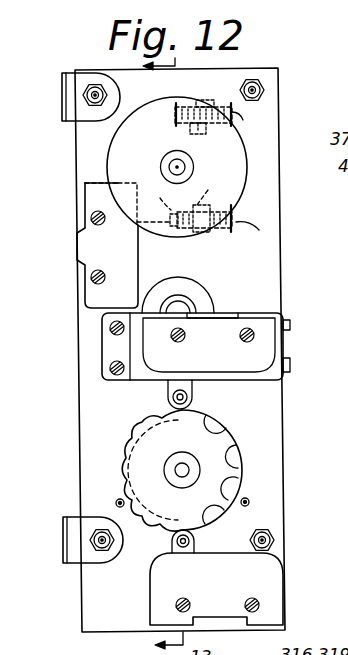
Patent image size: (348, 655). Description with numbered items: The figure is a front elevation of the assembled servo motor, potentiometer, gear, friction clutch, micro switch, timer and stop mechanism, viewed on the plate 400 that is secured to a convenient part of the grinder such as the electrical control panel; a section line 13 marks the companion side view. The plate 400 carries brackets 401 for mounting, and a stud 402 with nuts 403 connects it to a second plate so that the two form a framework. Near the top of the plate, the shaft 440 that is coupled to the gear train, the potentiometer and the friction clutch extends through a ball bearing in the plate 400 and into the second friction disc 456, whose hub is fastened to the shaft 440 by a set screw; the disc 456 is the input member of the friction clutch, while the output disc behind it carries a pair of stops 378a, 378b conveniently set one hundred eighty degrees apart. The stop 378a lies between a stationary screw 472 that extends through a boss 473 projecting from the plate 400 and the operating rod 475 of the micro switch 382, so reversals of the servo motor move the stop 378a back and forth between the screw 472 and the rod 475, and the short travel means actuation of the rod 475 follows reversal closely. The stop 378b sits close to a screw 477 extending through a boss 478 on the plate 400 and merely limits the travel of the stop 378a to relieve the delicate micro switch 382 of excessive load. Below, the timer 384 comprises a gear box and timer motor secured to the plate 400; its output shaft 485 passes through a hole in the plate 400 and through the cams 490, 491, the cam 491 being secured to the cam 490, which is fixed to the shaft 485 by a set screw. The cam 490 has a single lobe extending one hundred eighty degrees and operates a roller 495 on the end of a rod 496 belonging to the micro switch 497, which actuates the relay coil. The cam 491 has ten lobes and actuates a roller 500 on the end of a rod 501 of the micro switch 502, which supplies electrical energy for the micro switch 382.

The section line 13 is at (174, 353).
The plate 400 is at (176, 350).
The brackets 401 is at (68, 312).
The stud 402 is at (197, 319).
The nuts 403 is at (174, 293).
The second friction disc 456 is at (137, 167).
The shaft 440 is at (198, 167).
The stop 378b is at (180, 104).
The stop 378a is at (184, 237).
The screw 477 is at (254, 119).
The boss 478 is at (168, 138).
The boss 473 is at (216, 192).
The operating rod 475 is at (159, 196).
The stationary screw 472 is at (249, 237).
The micro switch 382 is at (75, 245).
The timer 384 is at (196, 466).
The micro switch 502 is at (209, 342).
The roller 500 is at (210, 394).
The rod 501 is at (154, 394).
The cam 490 is at (198, 470).
The cam 491 is at (139, 461).
The output shaft 485 is at (182, 467).
The roller 495 is at (207, 541).
The rod 496 is at (204, 561).
The micro switch 497 is at (216, 589).